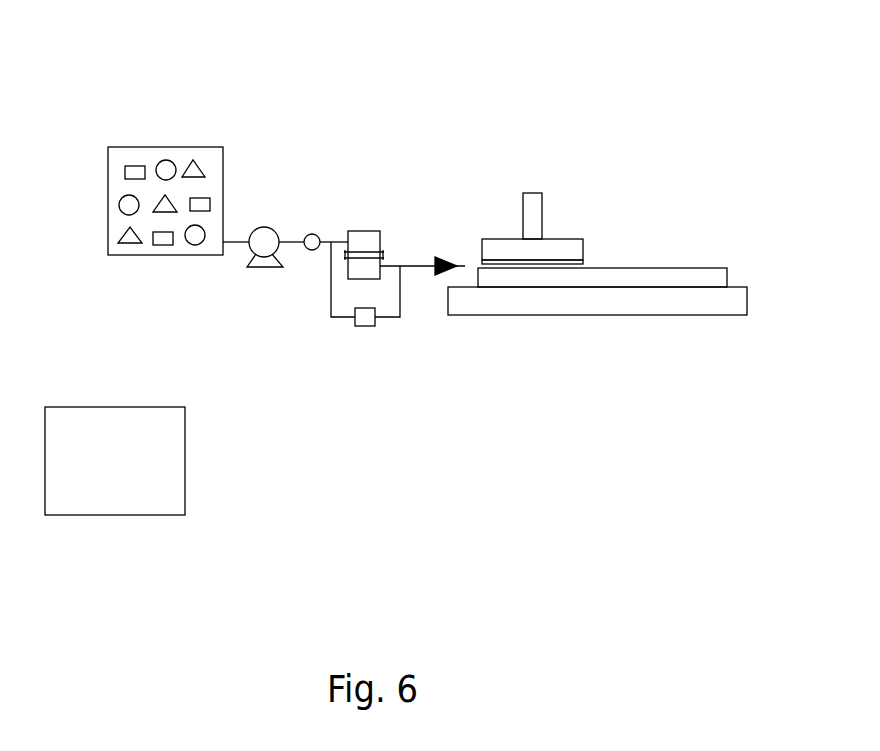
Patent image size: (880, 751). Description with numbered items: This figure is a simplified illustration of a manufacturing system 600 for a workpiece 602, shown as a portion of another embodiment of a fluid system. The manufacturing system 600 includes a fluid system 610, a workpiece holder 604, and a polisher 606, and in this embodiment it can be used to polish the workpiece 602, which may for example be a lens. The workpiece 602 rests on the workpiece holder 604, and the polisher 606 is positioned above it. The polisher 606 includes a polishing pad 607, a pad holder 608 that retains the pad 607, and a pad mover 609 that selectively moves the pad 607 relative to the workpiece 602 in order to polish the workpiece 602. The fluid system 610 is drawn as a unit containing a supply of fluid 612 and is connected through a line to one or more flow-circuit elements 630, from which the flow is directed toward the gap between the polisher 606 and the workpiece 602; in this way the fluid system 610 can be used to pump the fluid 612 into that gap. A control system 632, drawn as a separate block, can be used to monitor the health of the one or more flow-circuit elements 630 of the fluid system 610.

The manufacturing system 600 is at (430, 88).
The workpiece 602 is at (685, 268).
The workpiece holder 604 is at (587, 307).
The polisher 606 is at (533, 193).
The polishing pad 607 is at (583, 261).
The pad holder 608 is at (557, 247).
The pad mover 609 is at (538, 213).
The fluid system 610 is at (185, 147).
The fluid 612 is at (140, 168).
The flow-circuit element 630 is at (362, 231).
The control system 632 is at (73, 407).